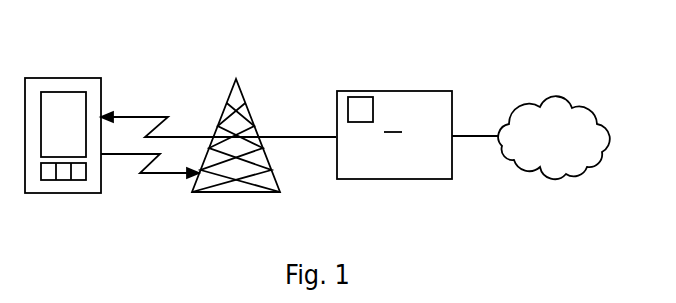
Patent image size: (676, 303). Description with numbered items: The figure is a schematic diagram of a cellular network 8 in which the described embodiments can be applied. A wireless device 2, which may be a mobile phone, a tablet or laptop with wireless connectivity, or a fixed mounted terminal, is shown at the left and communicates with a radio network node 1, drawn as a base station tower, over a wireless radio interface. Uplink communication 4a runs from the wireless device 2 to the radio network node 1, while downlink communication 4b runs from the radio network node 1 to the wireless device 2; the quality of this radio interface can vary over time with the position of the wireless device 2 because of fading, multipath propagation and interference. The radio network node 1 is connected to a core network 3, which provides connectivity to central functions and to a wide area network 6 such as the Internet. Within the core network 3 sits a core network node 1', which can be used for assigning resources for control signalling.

The radio network node 1 is at (239, 123).
The core network node 1' is at (357, 77).
The wireless device 2 is at (68, 78).
The core network 3 is at (417, 135).
The uplink communication 4a is at (158, 175).
The downlink communication 4b is at (147, 113).
The wide area network 6 is at (512, 162).
The cellular network 8 is at (562, 64).